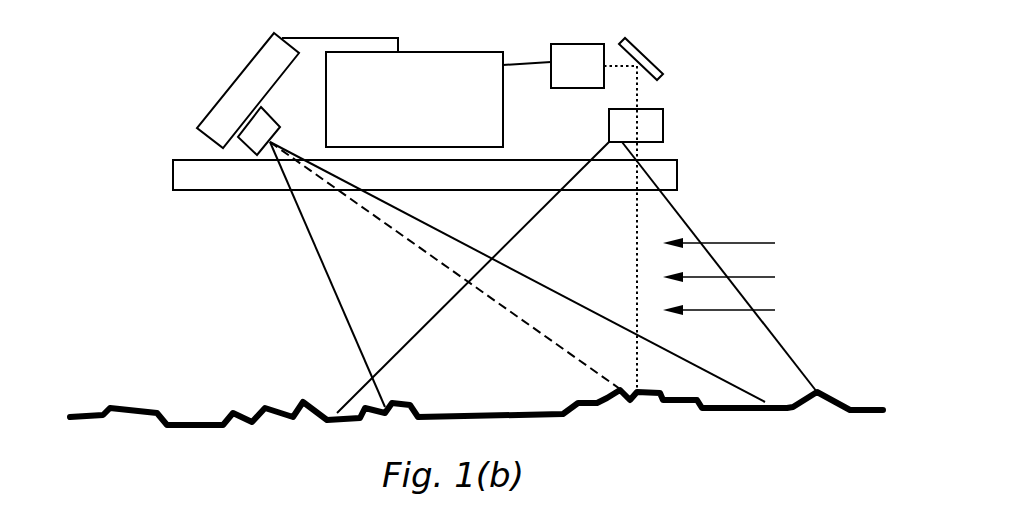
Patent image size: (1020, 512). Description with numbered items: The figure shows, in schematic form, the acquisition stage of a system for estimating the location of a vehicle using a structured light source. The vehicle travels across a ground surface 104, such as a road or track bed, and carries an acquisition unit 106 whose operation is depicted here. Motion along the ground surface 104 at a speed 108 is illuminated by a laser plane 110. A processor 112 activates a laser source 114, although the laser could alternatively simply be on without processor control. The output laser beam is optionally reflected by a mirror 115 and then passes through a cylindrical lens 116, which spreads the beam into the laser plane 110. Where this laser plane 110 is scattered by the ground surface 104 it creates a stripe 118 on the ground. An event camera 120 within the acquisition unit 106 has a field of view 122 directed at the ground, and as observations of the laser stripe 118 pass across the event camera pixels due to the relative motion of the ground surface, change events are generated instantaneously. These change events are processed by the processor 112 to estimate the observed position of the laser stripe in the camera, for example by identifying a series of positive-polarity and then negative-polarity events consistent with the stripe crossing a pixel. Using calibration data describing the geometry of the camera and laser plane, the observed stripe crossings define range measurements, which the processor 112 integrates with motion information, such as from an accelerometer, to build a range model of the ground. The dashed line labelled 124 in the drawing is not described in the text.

The ground surface 104 is at (562, 418).
The acquisition unit 106 is at (150, 111).
The speed 108 is at (749, 276).
The laser plane 110 is at (635, 230).
The processor 112 is at (438, 99).
The laser source 114 is at (580, 80).
The mirror 115 is at (638, 52).
The cylindrical lens 116 is at (655, 126).
The stripe 118 is at (635, 392).
The event camera 120 is at (235, 88).
The field of view 122 is at (517, 274).
The camera optical axis 124 is at (438, 260).